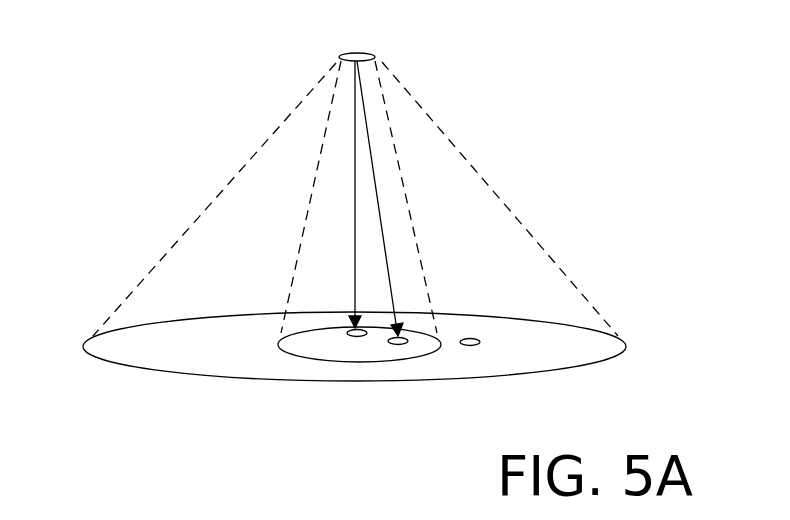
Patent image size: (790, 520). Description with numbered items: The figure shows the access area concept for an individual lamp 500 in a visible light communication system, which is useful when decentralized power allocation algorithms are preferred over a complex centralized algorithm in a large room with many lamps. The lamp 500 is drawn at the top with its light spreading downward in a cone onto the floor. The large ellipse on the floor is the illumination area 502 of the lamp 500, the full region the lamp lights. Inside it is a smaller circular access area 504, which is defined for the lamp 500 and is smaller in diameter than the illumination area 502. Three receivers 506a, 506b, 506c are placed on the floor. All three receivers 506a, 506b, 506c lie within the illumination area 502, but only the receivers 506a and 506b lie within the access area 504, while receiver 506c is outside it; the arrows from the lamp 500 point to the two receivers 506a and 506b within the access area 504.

The lamp 500 is at (355, 52).
The illumination area 502 is at (586, 366).
The access area 504 is at (374, 363).
The receiver 506a is at (352, 337).
The receiver 506b is at (404, 344).
The receiver 506c is at (473, 338).